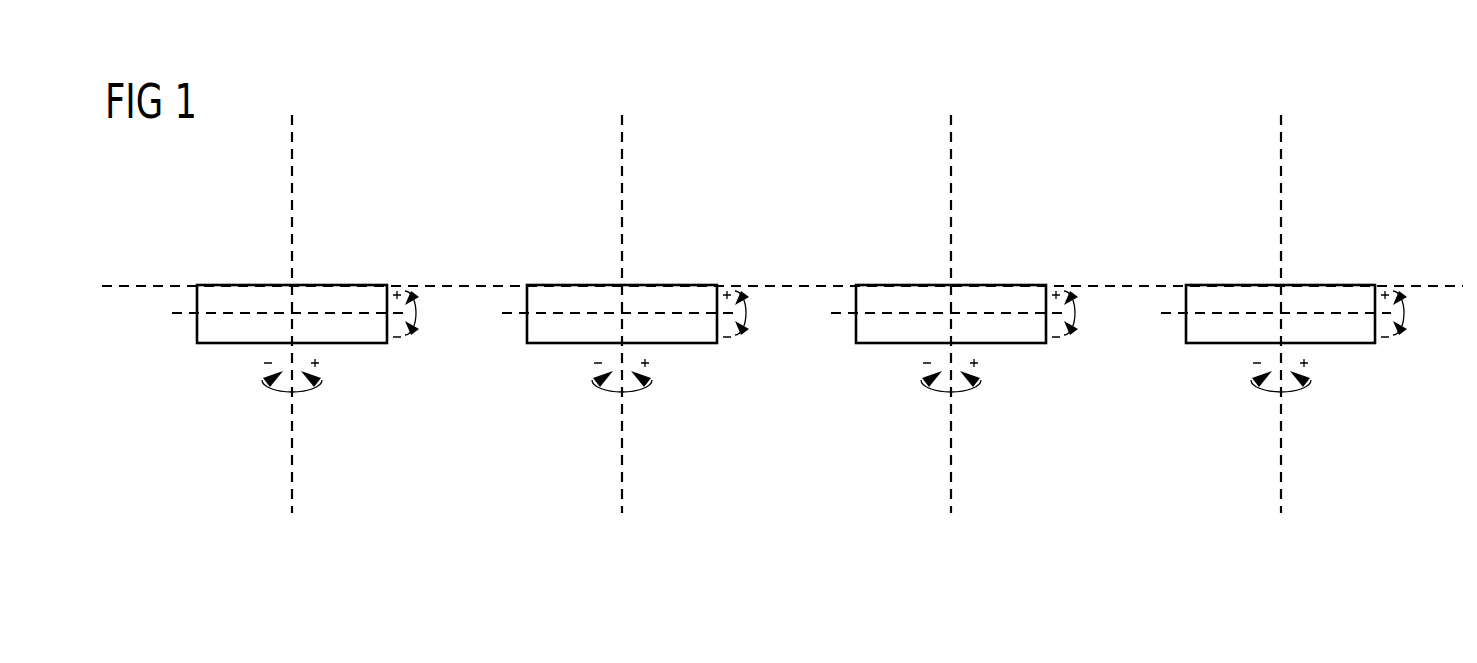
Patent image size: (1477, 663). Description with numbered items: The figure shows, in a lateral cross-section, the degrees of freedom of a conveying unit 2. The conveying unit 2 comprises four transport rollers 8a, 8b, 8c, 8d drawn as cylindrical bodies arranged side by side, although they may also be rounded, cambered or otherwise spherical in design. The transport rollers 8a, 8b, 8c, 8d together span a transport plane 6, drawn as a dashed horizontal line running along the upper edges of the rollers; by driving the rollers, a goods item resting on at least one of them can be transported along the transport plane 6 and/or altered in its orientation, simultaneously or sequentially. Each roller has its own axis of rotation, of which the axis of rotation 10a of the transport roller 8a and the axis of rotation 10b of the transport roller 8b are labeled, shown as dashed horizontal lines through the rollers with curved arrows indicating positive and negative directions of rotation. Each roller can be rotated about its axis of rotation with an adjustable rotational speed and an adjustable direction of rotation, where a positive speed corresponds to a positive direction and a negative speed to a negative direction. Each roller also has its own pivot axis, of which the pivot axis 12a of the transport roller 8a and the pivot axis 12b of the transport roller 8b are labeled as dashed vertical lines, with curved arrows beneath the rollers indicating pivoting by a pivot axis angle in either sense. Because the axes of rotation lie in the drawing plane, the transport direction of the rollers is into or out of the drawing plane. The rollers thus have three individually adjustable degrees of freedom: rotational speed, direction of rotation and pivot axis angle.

The conveying unit 2 is at (1395, 166).
The transport plane 6 is at (1130, 285).
The transport roller 8a is at (336, 285).
The transport roller 8b is at (673, 285).
The transport roller 8c is at (1008, 285).
The transport roller 8d is at (1340, 285).
The axis of rotation 10a is at (177, 318).
The axis of rotation 10b is at (505, 318).
The pivot axis 12a is at (292, 467).
The pivot axis 12b is at (622, 467).